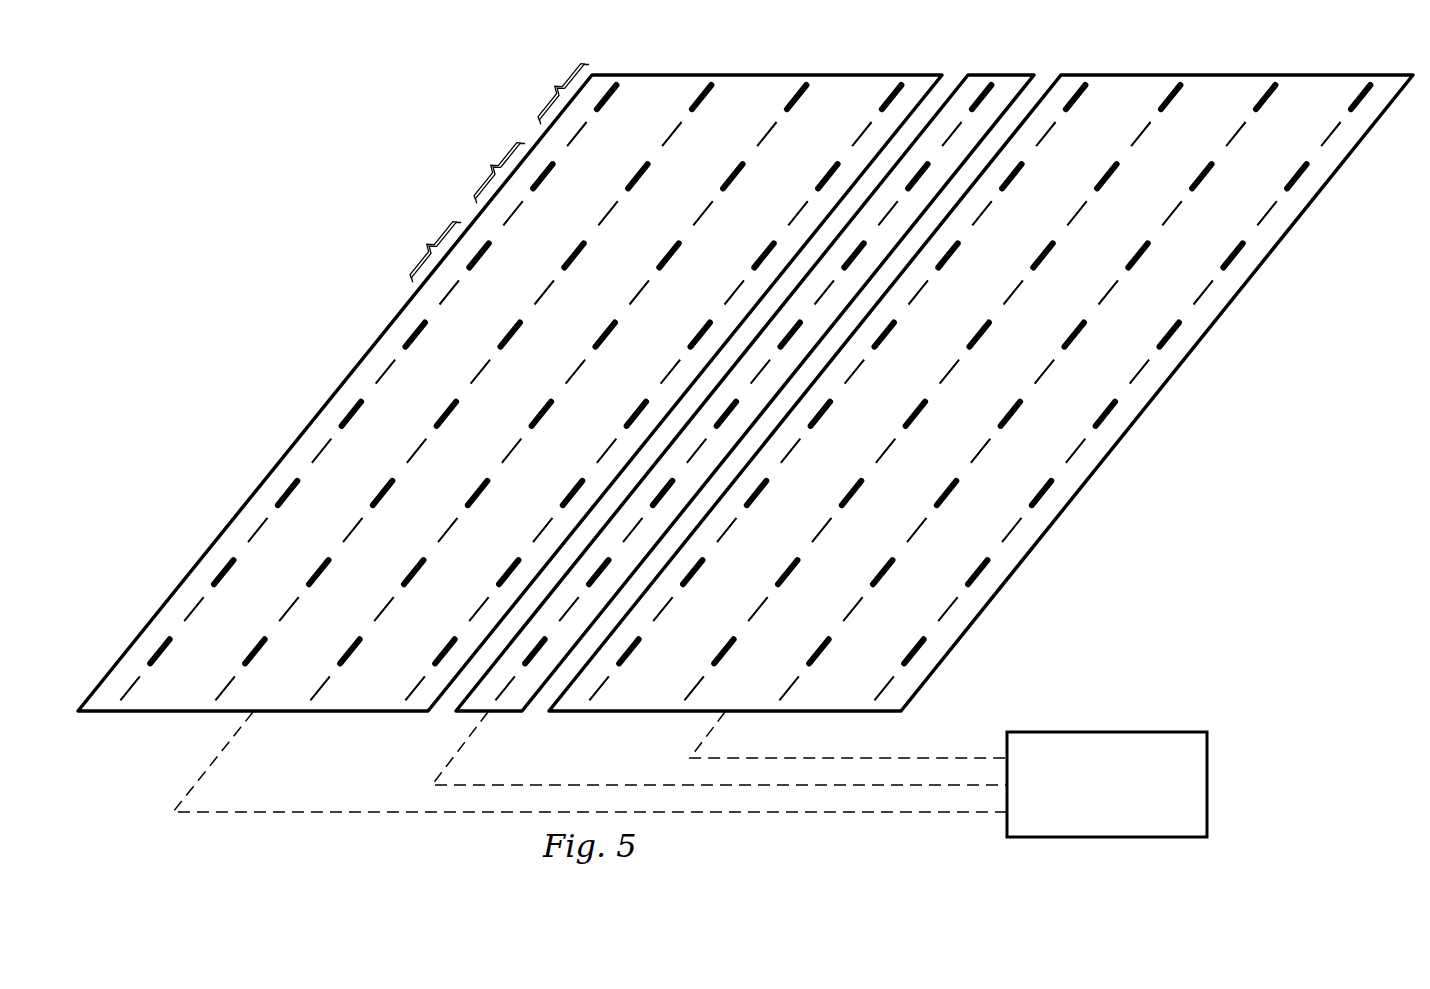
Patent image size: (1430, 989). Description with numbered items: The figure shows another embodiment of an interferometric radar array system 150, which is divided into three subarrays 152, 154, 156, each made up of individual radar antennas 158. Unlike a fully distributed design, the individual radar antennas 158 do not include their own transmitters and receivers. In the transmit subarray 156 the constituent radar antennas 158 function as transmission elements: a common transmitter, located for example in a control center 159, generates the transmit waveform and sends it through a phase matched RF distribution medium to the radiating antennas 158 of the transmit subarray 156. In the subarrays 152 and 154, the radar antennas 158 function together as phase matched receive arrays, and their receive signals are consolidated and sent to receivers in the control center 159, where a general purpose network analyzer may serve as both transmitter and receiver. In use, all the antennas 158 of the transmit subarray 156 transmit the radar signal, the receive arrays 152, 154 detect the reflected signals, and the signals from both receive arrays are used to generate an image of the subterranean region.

The radar array system 150 is at (272, 273).
The subarray 152 is at (742, 74).
The subarray 154 is at (1252, 74).
The subarray 156 is at (1012, 74).
The radar antennas 158 is at (487, 169).
The control center 159 is at (1105, 732).